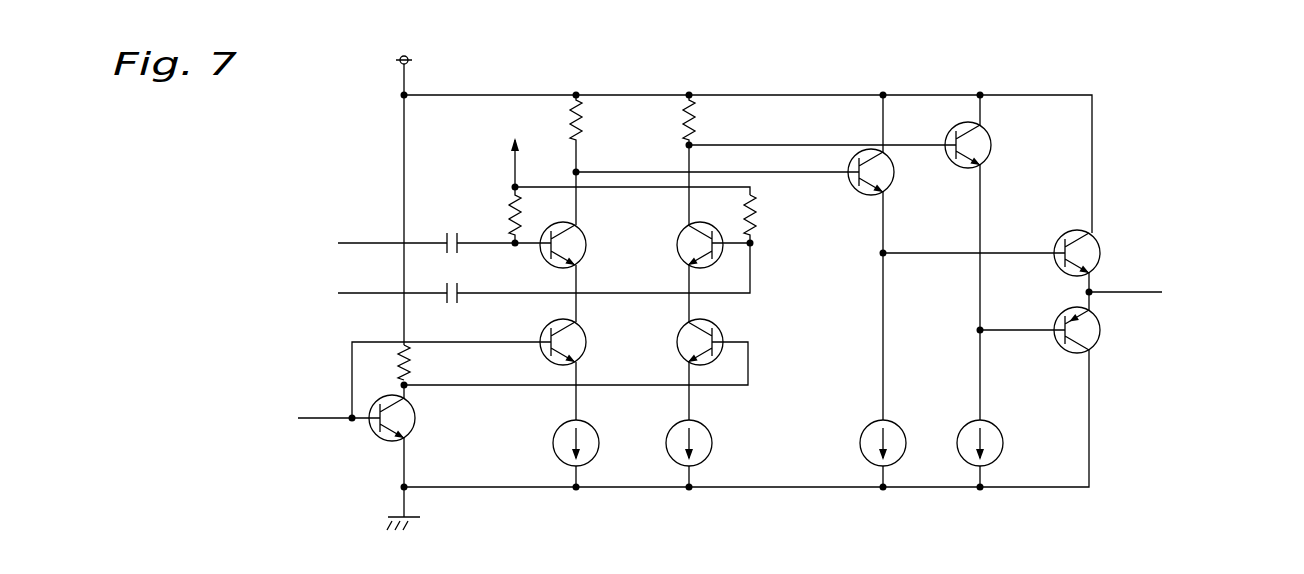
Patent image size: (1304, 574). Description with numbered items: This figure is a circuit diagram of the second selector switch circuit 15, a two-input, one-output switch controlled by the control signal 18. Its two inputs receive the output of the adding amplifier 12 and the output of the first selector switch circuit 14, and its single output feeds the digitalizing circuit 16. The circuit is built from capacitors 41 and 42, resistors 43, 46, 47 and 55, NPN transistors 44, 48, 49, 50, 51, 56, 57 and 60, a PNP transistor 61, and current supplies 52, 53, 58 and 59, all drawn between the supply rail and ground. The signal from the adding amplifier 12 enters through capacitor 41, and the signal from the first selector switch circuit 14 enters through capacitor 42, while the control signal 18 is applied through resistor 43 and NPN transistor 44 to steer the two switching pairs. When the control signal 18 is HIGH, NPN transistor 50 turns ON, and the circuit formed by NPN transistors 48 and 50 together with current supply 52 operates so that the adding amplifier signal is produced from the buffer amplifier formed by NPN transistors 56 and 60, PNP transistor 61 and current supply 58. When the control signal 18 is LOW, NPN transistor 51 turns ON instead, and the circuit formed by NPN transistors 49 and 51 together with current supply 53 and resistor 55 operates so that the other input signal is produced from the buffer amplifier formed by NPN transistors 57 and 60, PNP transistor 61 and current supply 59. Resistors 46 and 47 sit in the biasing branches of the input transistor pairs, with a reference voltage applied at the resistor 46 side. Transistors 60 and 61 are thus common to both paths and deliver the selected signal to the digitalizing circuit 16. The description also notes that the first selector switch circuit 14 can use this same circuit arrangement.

The adding amplifier 12 is at (325, 237).
The first selector switch circuit 14 is at (325, 287).
The second selector switch circuit 15 is at (862, 57).
The digitalizing circuit 16 is at (1152, 287).
The control signal 18 is at (285, 412).
The capacitor 41 is at (447, 232).
The capacitor 42 is at (453, 305).
The resistor 43 is at (398, 364).
The NPN transistor 44 is at (372, 438).
The resistor 46 is at (512, 213).
The resistor 47 is at (757, 212).
The NPN transistor 48 is at (545, 262).
The NPN transistor 49 is at (682, 262).
The NPN transistor 50 is at (545, 358).
The NPN transistor 51 is at (682, 358).
The current supply 52 is at (553, 445).
The current supply 53 is at (712, 445).
The resistor 55 is at (695, 118).
The NPN transistor 56 is at (852, 165).
The NPN transistor 57 is at (949, 133).
The current supply 58 is at (862, 436).
The current supply 59 is at (582, 118).
The NPN transistor 60 is at (1058, 242).
The PNP transistor 61 is at (1058, 320).